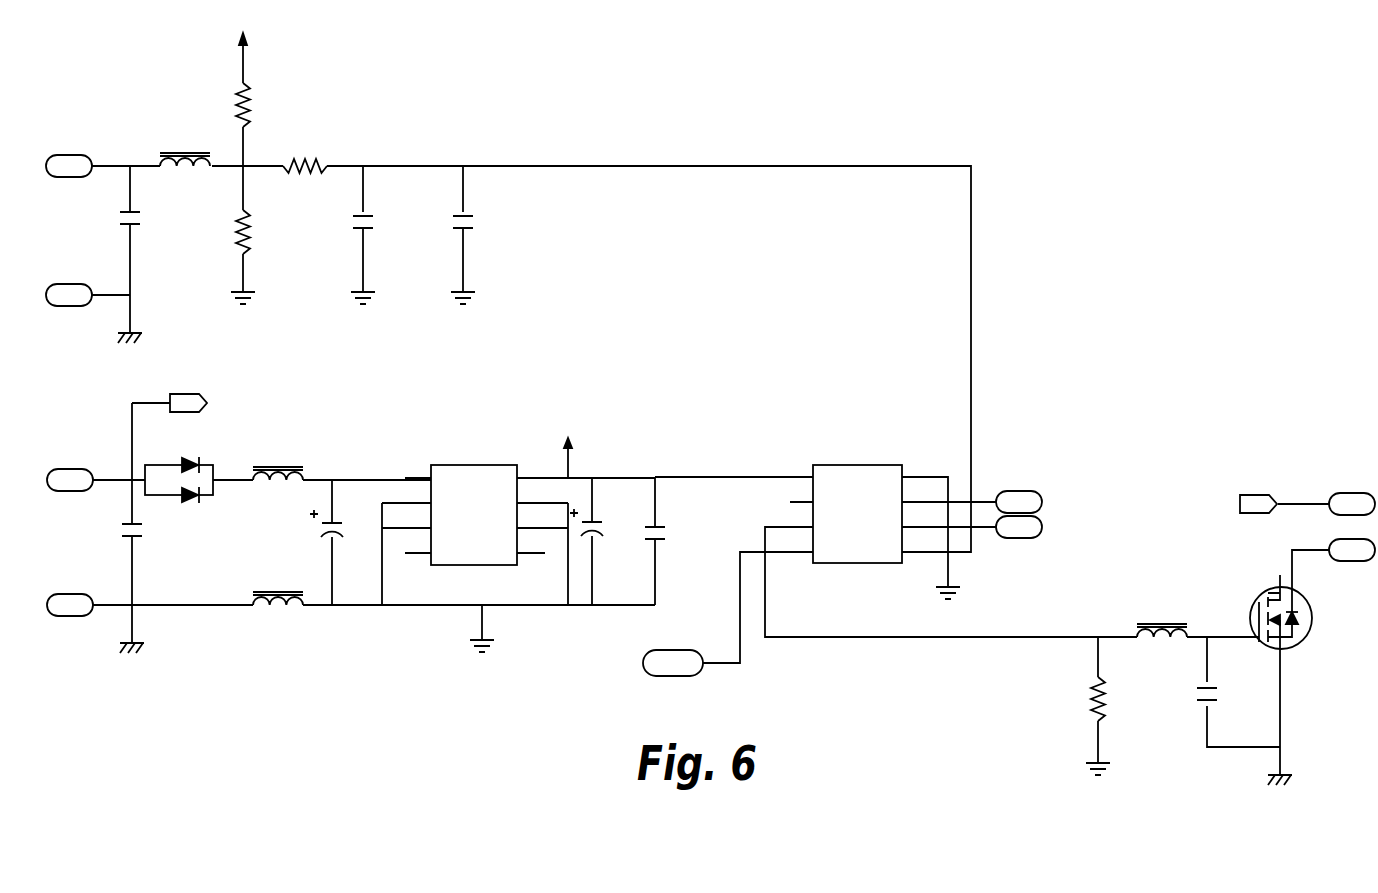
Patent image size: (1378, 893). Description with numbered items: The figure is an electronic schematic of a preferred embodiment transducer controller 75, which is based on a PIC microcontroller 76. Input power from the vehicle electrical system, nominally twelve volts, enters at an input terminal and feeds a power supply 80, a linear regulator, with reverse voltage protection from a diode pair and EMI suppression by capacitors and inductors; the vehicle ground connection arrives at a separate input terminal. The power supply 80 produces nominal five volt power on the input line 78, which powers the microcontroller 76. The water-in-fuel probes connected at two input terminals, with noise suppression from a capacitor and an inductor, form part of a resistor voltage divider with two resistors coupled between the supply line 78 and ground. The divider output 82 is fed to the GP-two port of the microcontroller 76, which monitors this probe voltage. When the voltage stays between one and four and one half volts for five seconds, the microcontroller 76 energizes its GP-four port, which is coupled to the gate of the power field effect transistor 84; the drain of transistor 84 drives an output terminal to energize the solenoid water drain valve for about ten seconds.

The transducer controller 75 is at (1025, 92).
The microcontroller 76 is at (870, 465).
The input line 78 is at (243, 58).
The power supply 80 is at (490, 465).
The output of voltage divider network 82 is at (812, 166).
The power field effect transistor 84 is at (1256, 596).